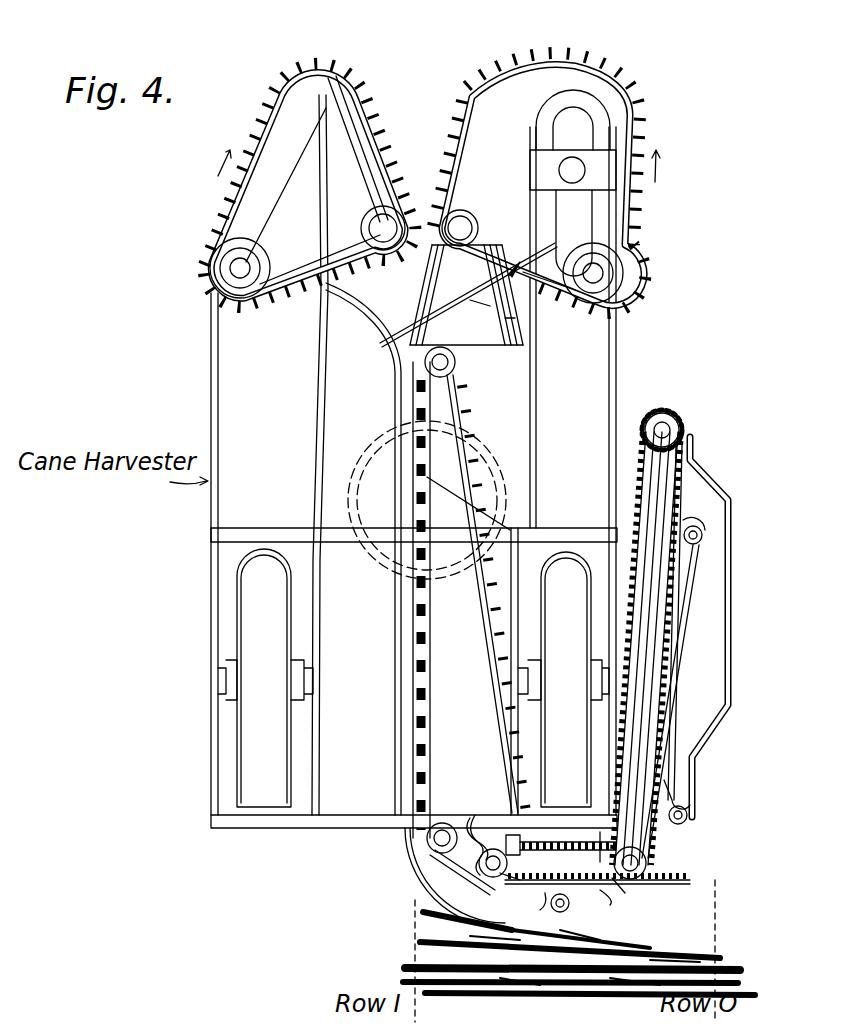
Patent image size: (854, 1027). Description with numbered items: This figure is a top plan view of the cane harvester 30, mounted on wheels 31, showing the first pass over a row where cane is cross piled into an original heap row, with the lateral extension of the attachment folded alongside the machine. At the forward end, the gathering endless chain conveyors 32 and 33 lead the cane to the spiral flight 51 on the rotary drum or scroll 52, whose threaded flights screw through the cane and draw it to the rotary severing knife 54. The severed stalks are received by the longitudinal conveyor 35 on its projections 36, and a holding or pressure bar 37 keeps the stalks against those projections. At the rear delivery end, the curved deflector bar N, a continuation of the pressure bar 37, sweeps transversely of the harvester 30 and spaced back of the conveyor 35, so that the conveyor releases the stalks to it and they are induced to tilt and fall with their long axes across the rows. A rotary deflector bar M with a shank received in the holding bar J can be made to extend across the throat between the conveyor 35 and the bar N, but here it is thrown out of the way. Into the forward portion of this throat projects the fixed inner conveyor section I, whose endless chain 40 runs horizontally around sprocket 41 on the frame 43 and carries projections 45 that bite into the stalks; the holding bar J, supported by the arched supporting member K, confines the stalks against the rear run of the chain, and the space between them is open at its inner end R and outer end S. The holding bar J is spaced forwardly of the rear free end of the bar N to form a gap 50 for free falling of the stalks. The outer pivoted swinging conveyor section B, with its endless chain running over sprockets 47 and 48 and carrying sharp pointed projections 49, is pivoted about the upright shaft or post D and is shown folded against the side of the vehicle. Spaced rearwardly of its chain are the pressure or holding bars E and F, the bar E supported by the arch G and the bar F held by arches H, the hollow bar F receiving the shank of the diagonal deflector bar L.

The cane harvester 30 is at (210, 399).
The wheels 31 is at (262, 562).
The gathering endless chain conveyor 32 is at (324, 68).
The gathering endless chain conveyor 33 is at (553, 68).
The longitudinal conveyor 35 is at (463, 414).
The projections 36 is at (465, 408).
The holding or pressure bar 37 is at (398, 358).
The endless chain 40 is at (545, 840).
The sprocket 41 is at (516, 894).
The frame 43 is at (570, 858).
The projections 45 is at (550, 905).
The sprocket 47 is at (642, 878).
The sprocket 48 is at (670, 418).
The projections 49 is at (652, 418).
The gap 50 is at (497, 928).
The spiral flight 51 is at (452, 303).
The rotary drum or scroll 52 is at (483, 327).
The rotary severing knife 54 is at (392, 482).
The pressure or holding bar F is at (695, 470).
The arches H is at (702, 538).
The outer pivoted swinging conveyor section / endless chain B is at (672, 584).
The diagonal deflector bar L is at (675, 700).
The pressure or holding bar E is at (670, 778).
The arch G is at (688, 822).
The upright shaft or post D is at (645, 878).
The outer end S is at (622, 880).
The pressure or holding bar J is at (615, 900).
The fixed inner conveyor section I is at (552, 842).
The rotary deflector bar M is at (476, 832).
The curved deflector bar N is at (410, 853).
The inner end R is at (462, 873).
The arched supporting member K is at (570, 903).